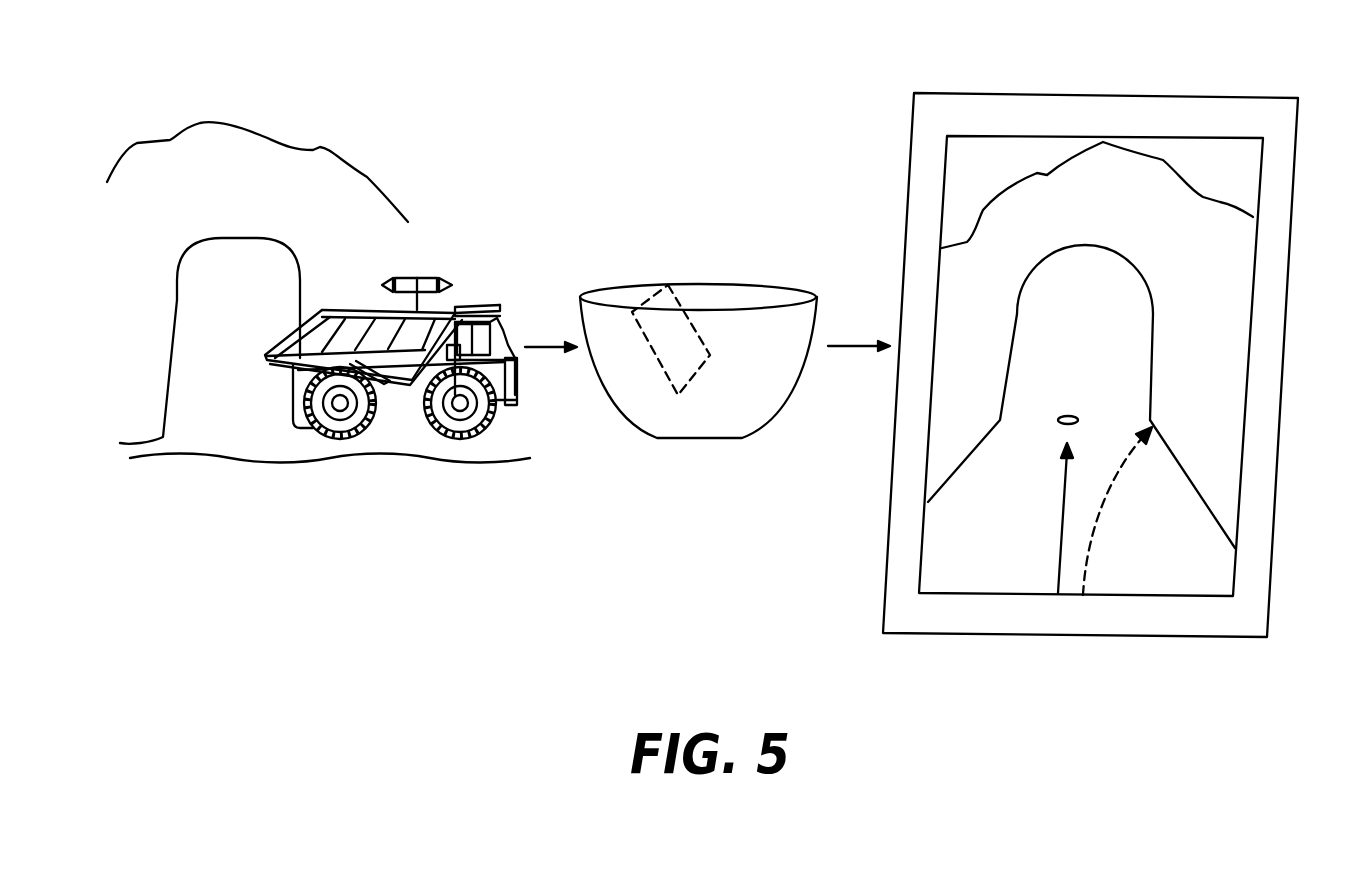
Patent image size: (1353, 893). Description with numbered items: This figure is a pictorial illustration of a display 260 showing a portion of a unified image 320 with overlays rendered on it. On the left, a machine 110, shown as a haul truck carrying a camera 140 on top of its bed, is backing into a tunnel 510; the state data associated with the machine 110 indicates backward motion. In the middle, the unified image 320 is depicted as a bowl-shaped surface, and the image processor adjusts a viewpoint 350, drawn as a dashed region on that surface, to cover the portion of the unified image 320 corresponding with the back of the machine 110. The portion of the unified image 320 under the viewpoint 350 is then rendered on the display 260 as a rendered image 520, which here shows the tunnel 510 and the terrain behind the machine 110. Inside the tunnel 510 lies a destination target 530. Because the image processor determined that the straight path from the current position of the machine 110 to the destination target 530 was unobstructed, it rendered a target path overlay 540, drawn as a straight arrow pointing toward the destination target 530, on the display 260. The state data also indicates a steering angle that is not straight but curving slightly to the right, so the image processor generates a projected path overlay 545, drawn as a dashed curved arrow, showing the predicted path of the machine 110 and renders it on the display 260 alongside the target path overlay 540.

The machine 110 is at (500, 308).
The camera 140 is at (430, 278).
The tunnel 510 is at (238, 237).
The unified image 320 is at (700, 440).
The viewpoint 350 is at (680, 305).
The display 260 is at (975, 93).
The rendered image 520 is at (923, 533).
The destination target 530 is at (1083, 412).
The target path overlay 540 is at (1062, 504).
The projected path overlay 545 is at (1102, 500).